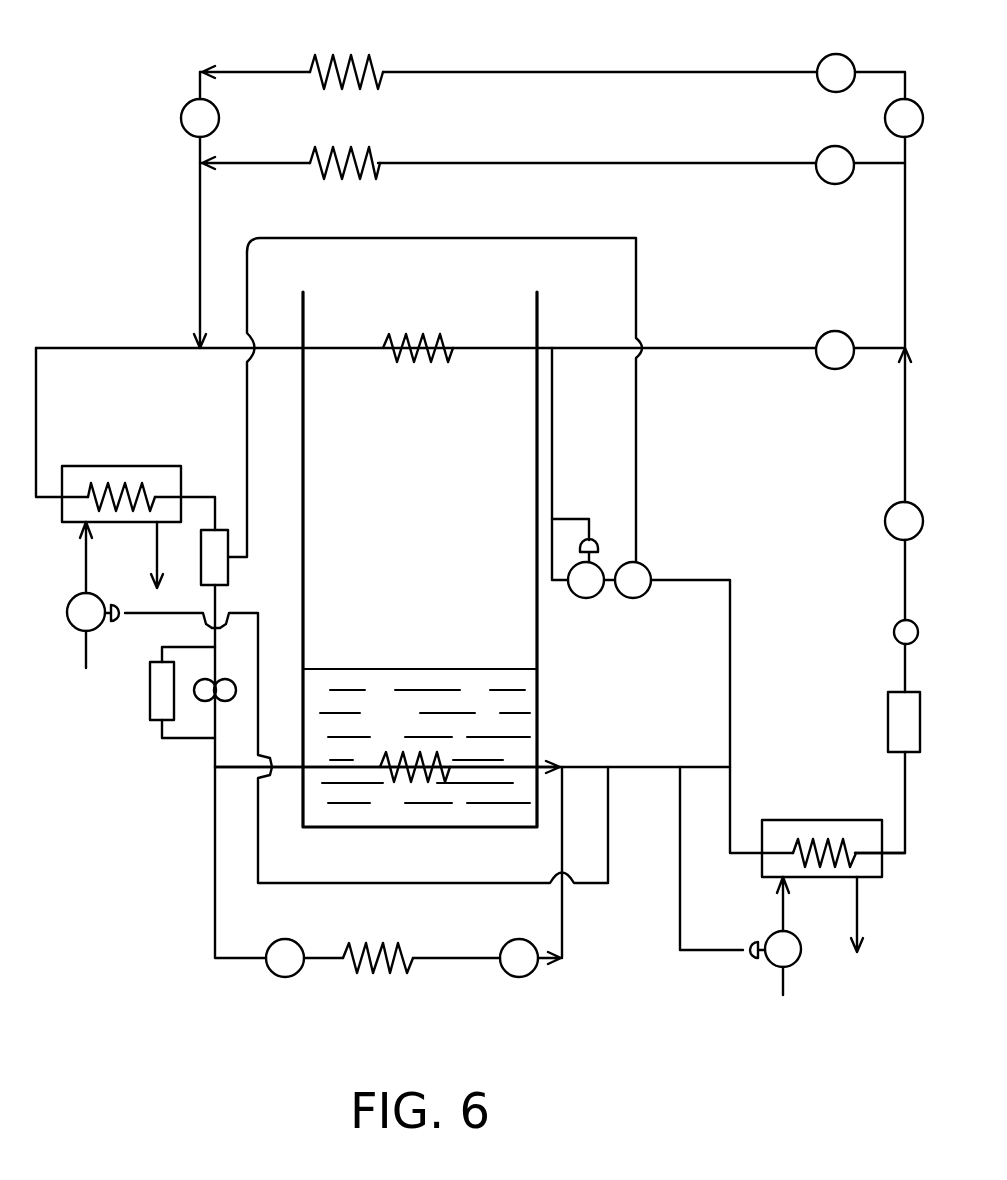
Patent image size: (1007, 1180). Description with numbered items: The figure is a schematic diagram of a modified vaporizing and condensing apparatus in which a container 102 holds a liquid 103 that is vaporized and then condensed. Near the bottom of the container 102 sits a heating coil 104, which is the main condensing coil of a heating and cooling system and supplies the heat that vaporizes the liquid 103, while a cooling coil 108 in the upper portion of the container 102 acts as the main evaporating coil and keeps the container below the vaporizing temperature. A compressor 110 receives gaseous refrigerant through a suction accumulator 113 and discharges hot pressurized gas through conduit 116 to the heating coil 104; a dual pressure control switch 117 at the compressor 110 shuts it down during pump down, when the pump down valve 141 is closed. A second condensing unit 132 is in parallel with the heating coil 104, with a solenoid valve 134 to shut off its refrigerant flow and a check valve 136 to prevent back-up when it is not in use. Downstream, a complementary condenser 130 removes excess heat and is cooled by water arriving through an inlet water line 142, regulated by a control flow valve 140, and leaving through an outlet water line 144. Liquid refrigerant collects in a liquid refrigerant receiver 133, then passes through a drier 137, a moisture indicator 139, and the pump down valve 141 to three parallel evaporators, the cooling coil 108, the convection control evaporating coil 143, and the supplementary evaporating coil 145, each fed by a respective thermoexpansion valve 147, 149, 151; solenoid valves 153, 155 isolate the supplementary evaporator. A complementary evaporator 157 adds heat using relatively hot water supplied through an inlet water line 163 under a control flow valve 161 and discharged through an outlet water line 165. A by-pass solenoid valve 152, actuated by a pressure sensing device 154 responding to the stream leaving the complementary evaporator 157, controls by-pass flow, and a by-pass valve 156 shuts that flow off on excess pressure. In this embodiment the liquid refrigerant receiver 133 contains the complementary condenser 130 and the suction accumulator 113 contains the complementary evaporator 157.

The container 102 is at (540, 683).
The liquid 103 is at (540, 725).
The heating coil 104 is at (418, 775).
The cooling coil 108 is at (395, 355).
The compressor 110 is at (205, 700).
The suction accumulator 113 is at (73, 524).
The conduit 116 is at (245, 768).
The dual pressure control switch 117 is at (150, 698).
The complementary condenser 130 is at (835, 840).
The condensing unit 132 is at (355, 975).
The liquid refrigerant receiver 133 is at (882, 877).
The solenoid valve 134 is at (283, 978).
The check valve 136 is at (520, 978).
The drier 137 is at (888, 723).
The moisture indicator 139 is at (895, 636).
The control flow valve 140 is at (752, 958).
The pump down valve 141 is at (885, 521).
The inlet water line 142 is at (783, 922).
The evaporating coil 143 is at (330, 150).
The outlet water line 144 is at (860, 950).
The evaporating coil 145 is at (348, 60).
The thermoexpansion valve 147 is at (826, 335).
The thermoexpansion valve 149 is at (826, 180).
The thermoexpansion valve 151 is at (822, 60).
The by-pass solenoid valve 152 is at (645, 566).
The solenoid valve 153 is at (885, 118).
The pressure sensing device 154 is at (230, 578).
The solenoid valve 155 is at (181, 118).
The by-pass valve 156 is at (586, 600).
The complementary evaporator 157 is at (92, 490).
The control flow valve 161 is at (112, 620).
The inlet water line 163 is at (84, 582).
The outlet water line 165 is at (157, 556).